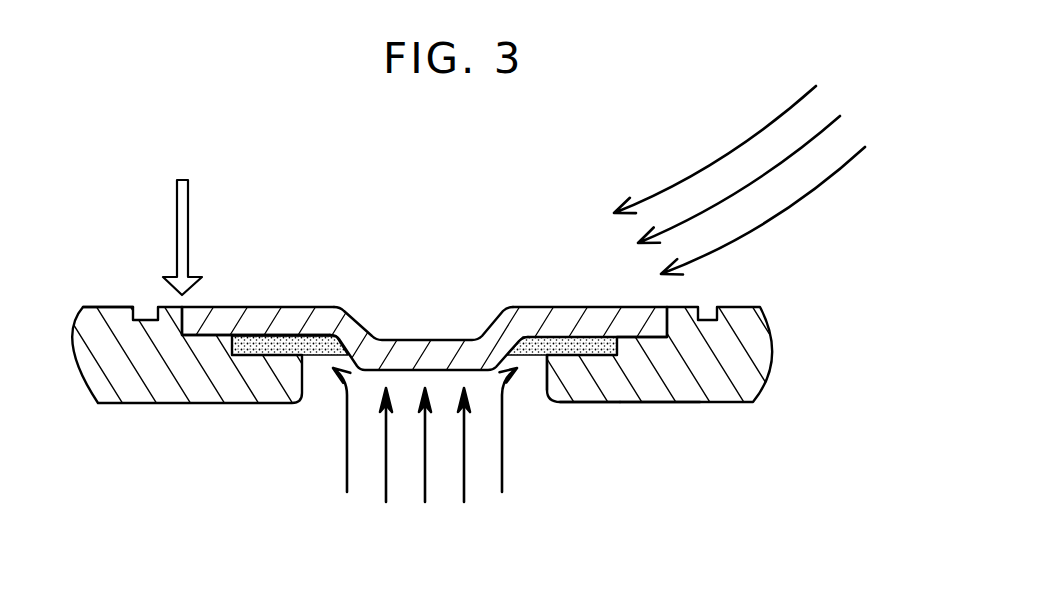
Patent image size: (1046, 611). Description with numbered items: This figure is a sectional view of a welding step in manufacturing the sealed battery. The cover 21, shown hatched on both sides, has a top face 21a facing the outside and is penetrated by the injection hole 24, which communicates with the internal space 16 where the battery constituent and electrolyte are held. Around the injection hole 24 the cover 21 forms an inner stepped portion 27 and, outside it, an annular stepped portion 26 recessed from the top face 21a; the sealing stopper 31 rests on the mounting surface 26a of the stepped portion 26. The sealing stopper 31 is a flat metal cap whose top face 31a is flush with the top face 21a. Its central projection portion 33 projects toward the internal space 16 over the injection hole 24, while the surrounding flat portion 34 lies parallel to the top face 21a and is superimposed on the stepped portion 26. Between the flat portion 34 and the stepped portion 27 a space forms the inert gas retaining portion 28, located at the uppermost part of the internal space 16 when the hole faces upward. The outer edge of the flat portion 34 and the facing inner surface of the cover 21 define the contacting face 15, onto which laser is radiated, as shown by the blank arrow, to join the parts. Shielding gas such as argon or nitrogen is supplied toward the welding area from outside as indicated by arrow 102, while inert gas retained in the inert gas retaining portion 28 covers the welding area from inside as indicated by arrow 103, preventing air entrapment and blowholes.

The contacting face 15 is at (208, 305).
The internal space 16 is at (673, 448).
The cover 21 is at (714, 392).
The top face 21a is at (113, 305).
The injection hole 24 is at (537, 378).
The stepped portion 26 is at (636, 343).
The mounting surface 26a is at (243, 305).
The stepped portion 27 is at (590, 390).
The inert gas retaining portion 28 is at (268, 352).
The sealing stopper 31 is at (431, 312).
The top face 31a is at (332, 305).
The projection portion 33 is at (425, 351).
The flat portion 34 is at (302, 305).
The arrow 102 is at (718, 158).
The arrow 103 is at (502, 468).